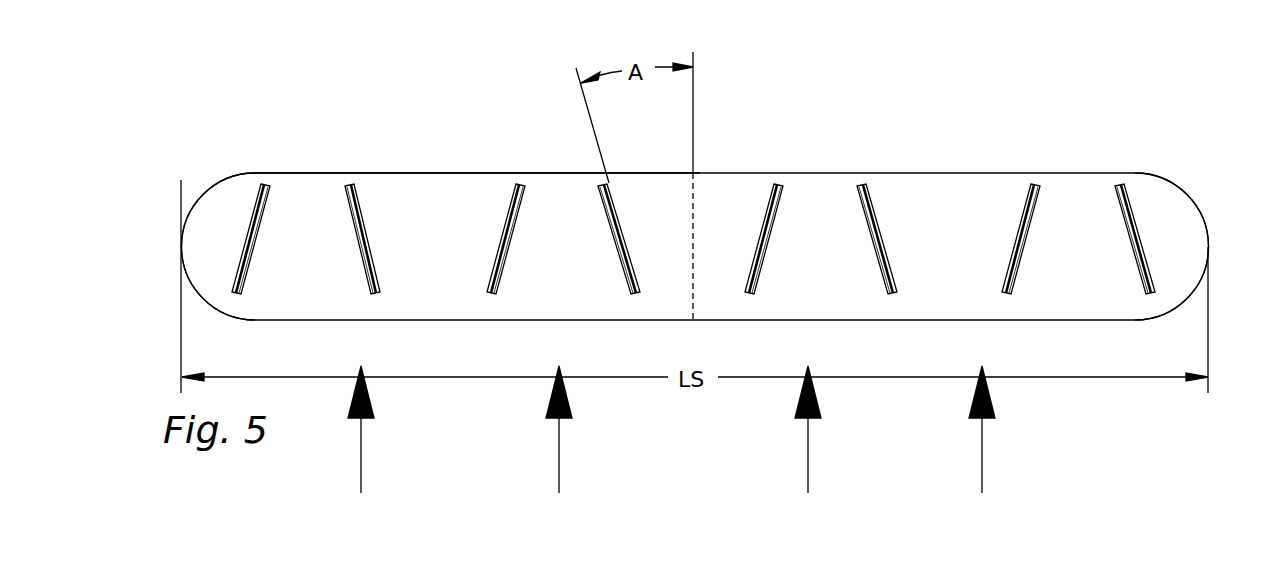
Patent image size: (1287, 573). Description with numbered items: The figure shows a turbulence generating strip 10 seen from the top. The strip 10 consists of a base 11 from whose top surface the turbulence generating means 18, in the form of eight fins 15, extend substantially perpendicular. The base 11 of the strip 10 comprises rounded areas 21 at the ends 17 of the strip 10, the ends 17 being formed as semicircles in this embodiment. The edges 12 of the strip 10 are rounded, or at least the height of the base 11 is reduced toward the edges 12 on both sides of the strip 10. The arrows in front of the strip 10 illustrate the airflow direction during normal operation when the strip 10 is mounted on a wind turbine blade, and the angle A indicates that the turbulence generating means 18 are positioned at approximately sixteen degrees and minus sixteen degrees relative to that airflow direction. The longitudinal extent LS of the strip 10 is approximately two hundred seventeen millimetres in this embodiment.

The turbulence generating strip 10 is at (1018, 104).
The base 11 is at (415, 207).
The edges 12 is at (310, 173).
The fins 15 is at (383, 287).
The ends 17 is at (181, 180).
The turbulence generating means 18 is at (878, 215).
The rounded areas 21 is at (1182, 185).